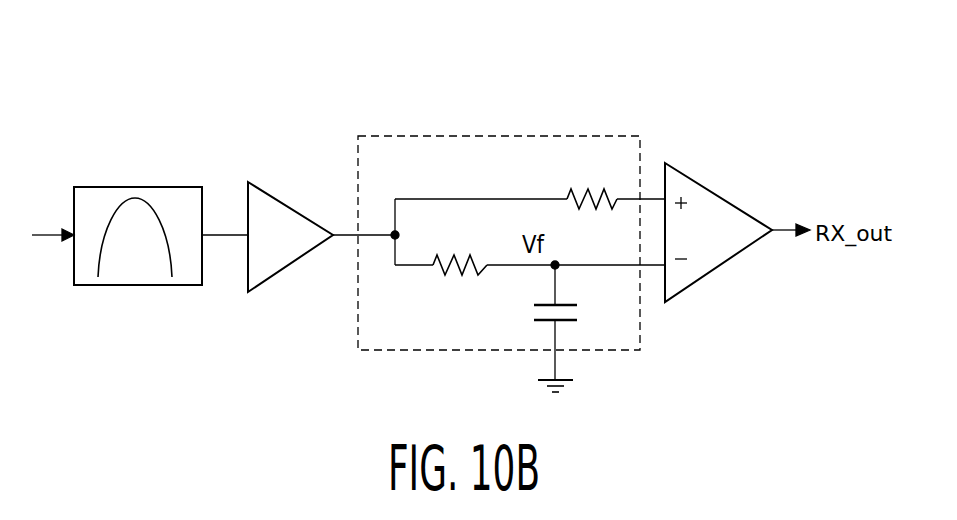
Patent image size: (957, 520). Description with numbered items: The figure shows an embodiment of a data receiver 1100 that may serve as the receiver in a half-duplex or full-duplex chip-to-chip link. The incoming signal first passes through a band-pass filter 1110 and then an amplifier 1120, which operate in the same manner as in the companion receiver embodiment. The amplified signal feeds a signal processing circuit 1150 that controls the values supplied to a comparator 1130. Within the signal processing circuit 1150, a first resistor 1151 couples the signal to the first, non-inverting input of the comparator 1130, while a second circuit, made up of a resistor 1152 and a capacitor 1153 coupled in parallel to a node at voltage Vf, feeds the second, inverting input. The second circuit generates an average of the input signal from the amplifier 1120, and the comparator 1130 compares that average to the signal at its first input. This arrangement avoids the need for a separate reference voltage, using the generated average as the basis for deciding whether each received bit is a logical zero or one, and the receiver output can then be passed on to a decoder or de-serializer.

The data receiver 1100 is at (742, 50).
The band-pass filter 1110 is at (109, 186).
The amplifier 1120 is at (280, 200).
The comparator 1130 is at (723, 199).
The signal processing circuit 1150 is at (523, 137).
The first resistor 1151 is at (567, 197).
The resistor (Rf) 1152 is at (443, 270).
The capacitor (Cf) 1153 is at (540, 322).